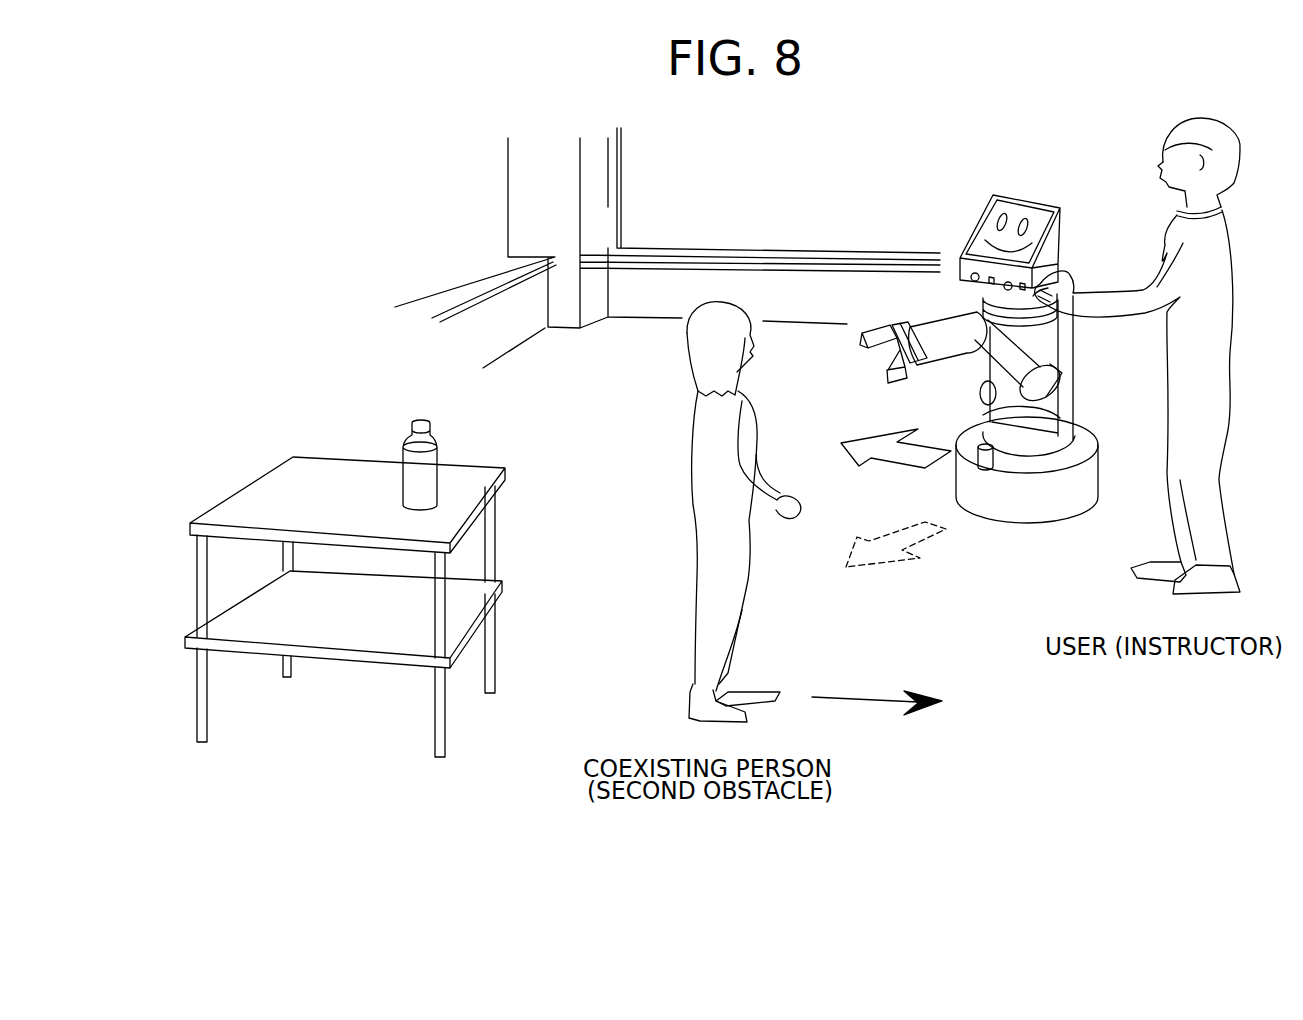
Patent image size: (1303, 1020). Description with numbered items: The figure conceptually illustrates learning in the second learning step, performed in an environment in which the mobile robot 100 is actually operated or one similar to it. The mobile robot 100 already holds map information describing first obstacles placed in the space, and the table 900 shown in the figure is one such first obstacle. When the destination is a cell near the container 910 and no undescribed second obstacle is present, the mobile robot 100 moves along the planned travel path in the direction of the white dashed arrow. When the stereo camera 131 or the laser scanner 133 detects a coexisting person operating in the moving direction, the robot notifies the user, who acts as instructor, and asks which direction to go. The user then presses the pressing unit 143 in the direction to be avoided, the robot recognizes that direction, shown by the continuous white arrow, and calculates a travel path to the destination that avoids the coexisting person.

The mobile robot 100 is at (930, 215).
The stereo camera 131 is at (974, 282).
The laser scanner 133 is at (980, 446).
The pressing unit 143 is at (1037, 318).
The table 900 is at (280, 480).
The container 910 is at (437, 433).